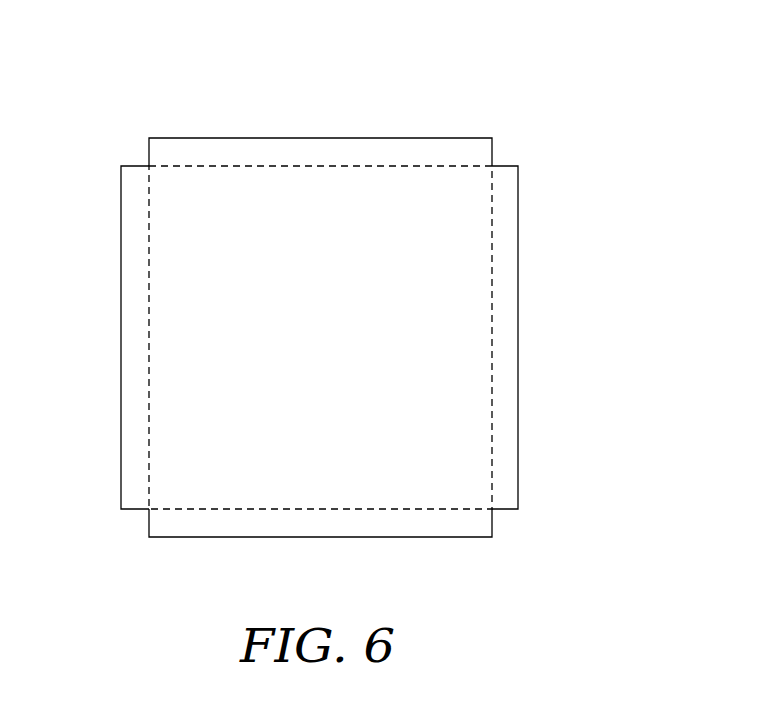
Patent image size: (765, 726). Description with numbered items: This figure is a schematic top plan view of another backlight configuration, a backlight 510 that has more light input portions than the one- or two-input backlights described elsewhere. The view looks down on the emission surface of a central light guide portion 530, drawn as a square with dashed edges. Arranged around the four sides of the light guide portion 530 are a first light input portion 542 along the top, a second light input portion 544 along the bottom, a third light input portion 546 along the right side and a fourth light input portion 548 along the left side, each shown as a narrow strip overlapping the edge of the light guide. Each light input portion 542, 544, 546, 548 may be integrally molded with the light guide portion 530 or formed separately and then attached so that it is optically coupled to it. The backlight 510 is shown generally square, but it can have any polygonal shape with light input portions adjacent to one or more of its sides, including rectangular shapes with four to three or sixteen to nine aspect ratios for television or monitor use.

The backlight 510 is at (388, 88).
The light guide portion 530 is at (345, 340).
The first light input portion 542 is at (288, 138).
The second light input portion 544 is at (230, 540).
The third light input portion 546 is at (519, 342).
The fourth light input portion 548 is at (120, 332).